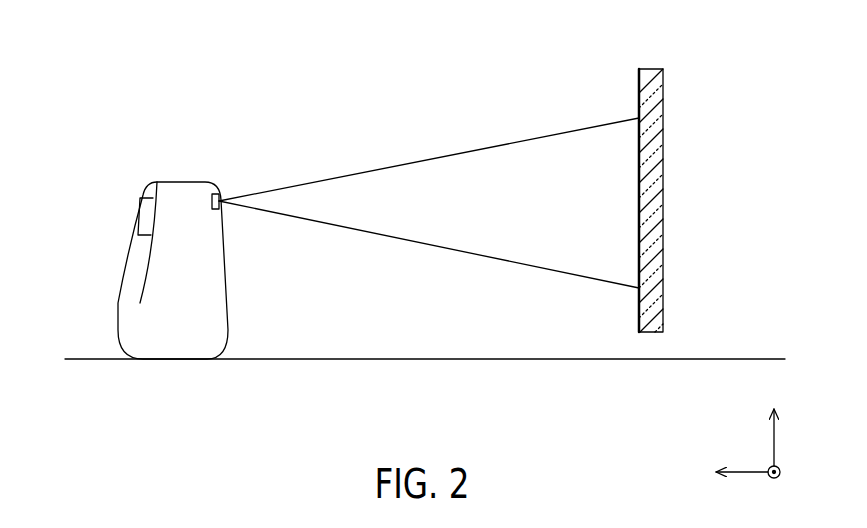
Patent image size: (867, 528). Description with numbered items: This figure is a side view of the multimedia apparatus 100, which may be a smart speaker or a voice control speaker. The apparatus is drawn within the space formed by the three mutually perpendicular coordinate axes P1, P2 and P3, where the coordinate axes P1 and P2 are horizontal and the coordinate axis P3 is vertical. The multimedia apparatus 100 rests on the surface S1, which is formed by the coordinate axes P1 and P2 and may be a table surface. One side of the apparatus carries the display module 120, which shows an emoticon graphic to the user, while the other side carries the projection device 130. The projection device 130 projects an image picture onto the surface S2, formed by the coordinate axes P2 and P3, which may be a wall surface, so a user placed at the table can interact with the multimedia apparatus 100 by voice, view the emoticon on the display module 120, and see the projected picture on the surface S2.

The multimedia apparatus 100 is at (186, 195).
The display module 120 is at (142, 213).
The projection device 130 is at (221, 199).
The surface S1 is at (87, 357).
The surface S2 is at (637, 90).
The coordinate axis P1 is at (724, 472).
The coordinate axis P2 is at (790, 489).
The coordinate axis P3 is at (774, 421).